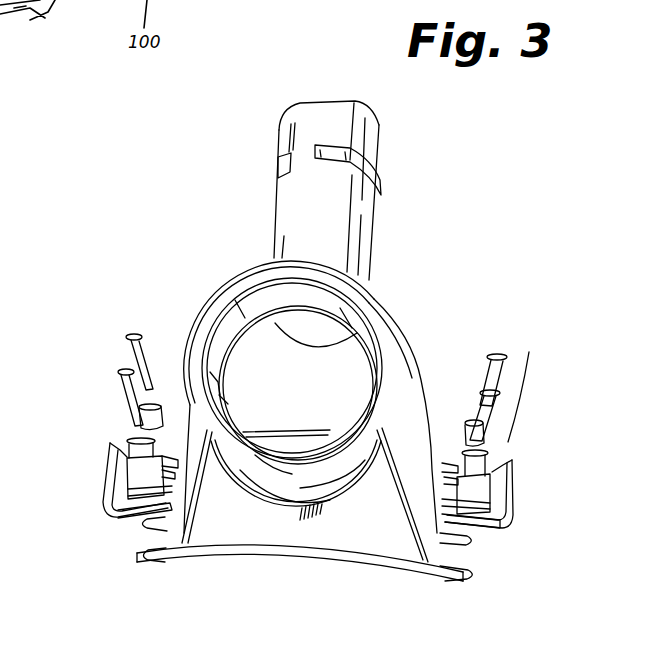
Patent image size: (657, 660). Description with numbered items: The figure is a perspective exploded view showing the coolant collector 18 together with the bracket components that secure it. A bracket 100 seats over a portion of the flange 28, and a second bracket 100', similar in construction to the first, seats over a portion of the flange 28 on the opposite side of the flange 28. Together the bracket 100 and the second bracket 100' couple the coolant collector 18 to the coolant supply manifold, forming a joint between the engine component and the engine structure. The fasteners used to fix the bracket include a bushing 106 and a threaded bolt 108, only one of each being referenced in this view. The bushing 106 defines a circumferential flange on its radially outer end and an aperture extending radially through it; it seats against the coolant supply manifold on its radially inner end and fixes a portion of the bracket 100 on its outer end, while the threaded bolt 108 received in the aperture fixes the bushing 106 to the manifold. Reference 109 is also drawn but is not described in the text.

The coolant collector 18 is at (432, 231).
The flange 28 is at (428, 575).
The bracket 100 is at (499, 522).
The second bracket 100' is at (118, 426).
The bushing 106 is at (466, 422).
The threaded bolt 108 is at (487, 372).
The fastener group 109 is at (536, 411).